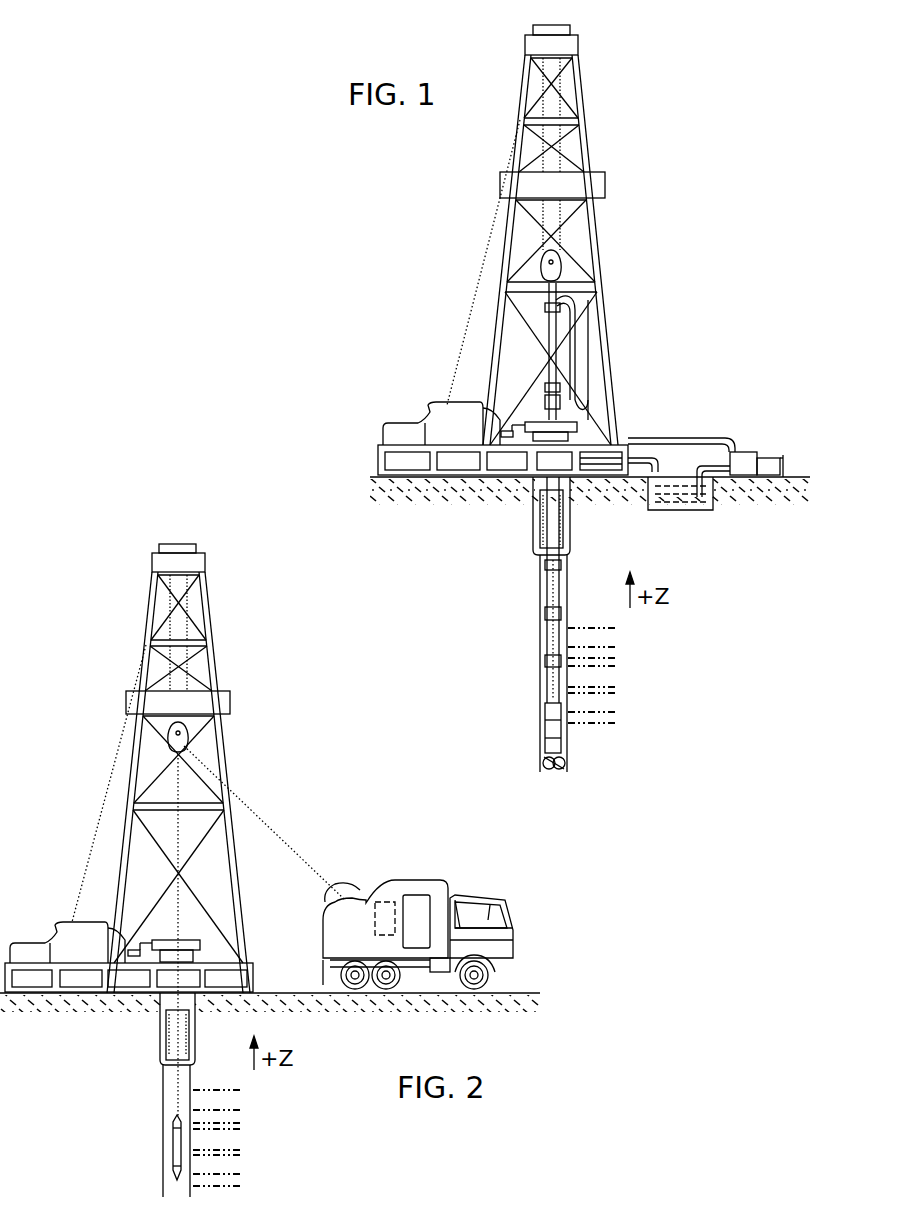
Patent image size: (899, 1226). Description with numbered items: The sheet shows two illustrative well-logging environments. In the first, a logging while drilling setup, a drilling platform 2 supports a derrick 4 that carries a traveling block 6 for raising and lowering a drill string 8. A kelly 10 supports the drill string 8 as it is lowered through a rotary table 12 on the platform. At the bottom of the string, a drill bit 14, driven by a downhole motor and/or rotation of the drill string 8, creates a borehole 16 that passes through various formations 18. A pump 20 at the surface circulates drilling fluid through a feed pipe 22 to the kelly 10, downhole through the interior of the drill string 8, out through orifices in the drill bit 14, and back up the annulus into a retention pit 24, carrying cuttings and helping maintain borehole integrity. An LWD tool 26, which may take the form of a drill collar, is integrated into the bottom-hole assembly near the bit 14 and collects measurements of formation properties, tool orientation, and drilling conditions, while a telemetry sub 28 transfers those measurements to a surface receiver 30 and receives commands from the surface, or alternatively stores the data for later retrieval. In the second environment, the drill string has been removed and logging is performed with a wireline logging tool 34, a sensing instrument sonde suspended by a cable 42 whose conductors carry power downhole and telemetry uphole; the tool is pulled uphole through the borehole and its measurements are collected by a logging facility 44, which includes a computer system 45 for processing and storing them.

In FIG. 1, the drilling platform 2 is at (383, 456).
In FIG. 2, the drilling platform 2 is at (257, 977).
In FIG. 1, the derrick 4 is at (590, 135).
In FIG. 2, the derrick 4 is at (243, 900).
In FIG. 1, the traveling block 6 is at (560, 272).
In FIG. 2, the traveling block 6 is at (187, 740).
In FIG. 1, the drill string 8 is at (548, 588).
In FIG. 1, the kelly 10 is at (563, 290).
In FIG. 1, the rotary table 12 is at (562, 430).
In FIG. 2, the rotary table 12 is at (128, 850).
In FIG. 1, the drill bit 14 is at (564, 762).
In FIG. 1, the borehole 16 is at (560, 584).
In FIG. 1, the formations 18 is at (620, 628).
In FIG. 2, the formations 18 is at (246, 1090).
In FIG. 1, the pump 20 is at (742, 456).
In FIG. 1, the feed pipe 22 is at (662, 438).
In FIG. 1, the retention pit 24 is at (668, 506).
In FIG. 1, the LWD tool 26 is at (548, 742).
In FIG. 1, the telemetry sub 28 is at (548, 708).
In FIG. 1, the surface receiver 30 is at (553, 378).
In FIG. 2, the wireline logging tool 34 is at (173, 1135).
In FIG. 2, the cable 42 is at (255, 808).
In FIG. 2, the logging facility 44 is at (438, 880).
In FIG. 2, the computer system 45 is at (385, 902).